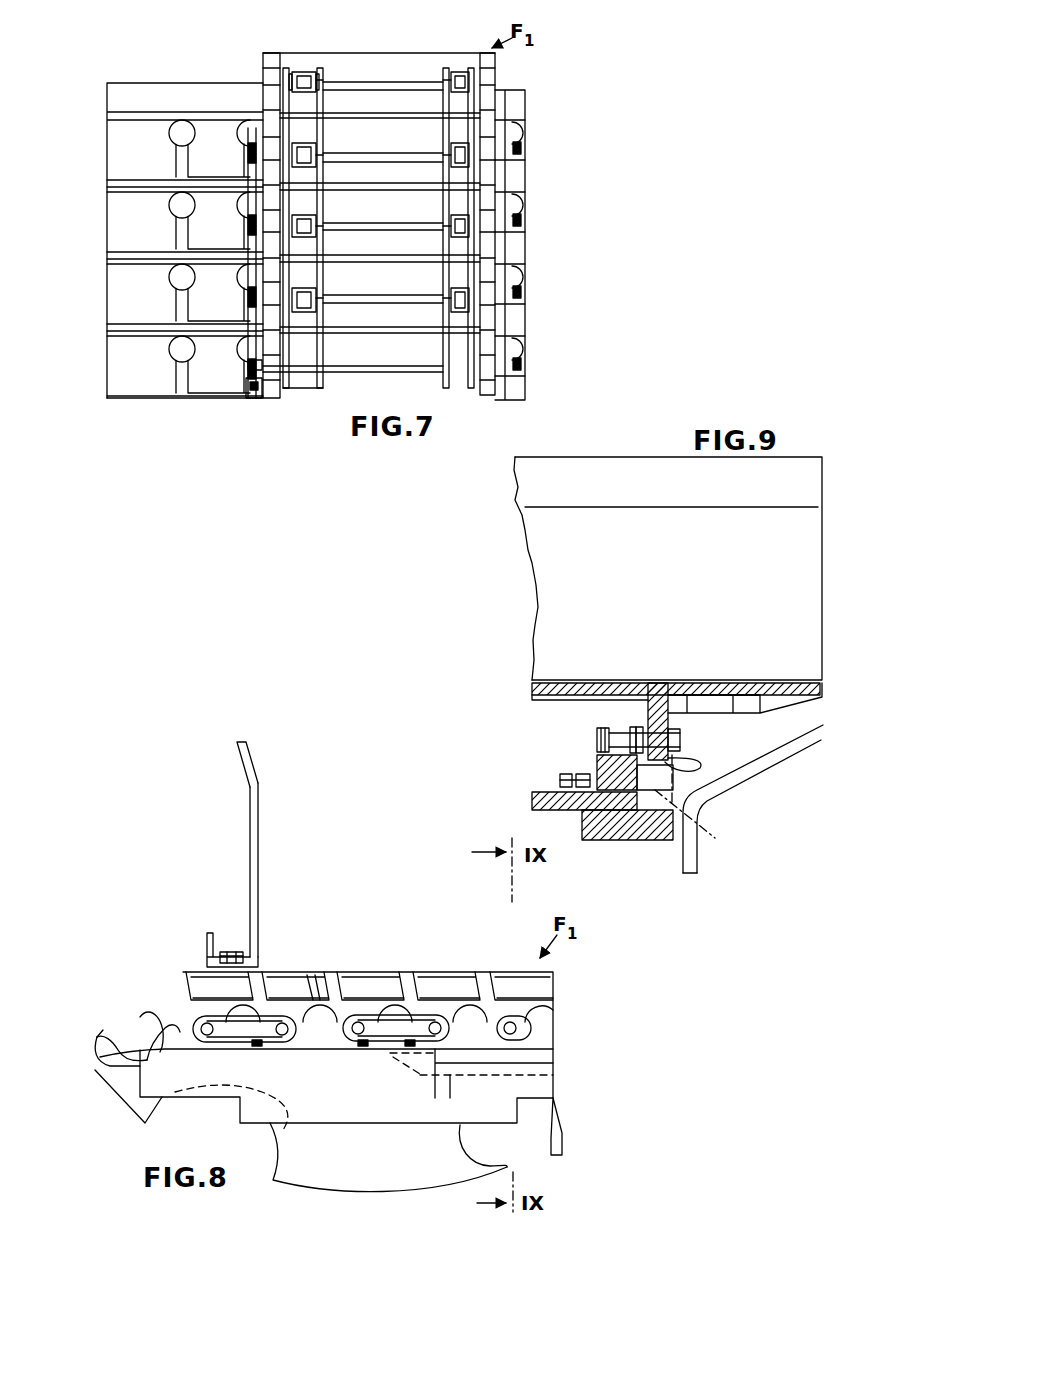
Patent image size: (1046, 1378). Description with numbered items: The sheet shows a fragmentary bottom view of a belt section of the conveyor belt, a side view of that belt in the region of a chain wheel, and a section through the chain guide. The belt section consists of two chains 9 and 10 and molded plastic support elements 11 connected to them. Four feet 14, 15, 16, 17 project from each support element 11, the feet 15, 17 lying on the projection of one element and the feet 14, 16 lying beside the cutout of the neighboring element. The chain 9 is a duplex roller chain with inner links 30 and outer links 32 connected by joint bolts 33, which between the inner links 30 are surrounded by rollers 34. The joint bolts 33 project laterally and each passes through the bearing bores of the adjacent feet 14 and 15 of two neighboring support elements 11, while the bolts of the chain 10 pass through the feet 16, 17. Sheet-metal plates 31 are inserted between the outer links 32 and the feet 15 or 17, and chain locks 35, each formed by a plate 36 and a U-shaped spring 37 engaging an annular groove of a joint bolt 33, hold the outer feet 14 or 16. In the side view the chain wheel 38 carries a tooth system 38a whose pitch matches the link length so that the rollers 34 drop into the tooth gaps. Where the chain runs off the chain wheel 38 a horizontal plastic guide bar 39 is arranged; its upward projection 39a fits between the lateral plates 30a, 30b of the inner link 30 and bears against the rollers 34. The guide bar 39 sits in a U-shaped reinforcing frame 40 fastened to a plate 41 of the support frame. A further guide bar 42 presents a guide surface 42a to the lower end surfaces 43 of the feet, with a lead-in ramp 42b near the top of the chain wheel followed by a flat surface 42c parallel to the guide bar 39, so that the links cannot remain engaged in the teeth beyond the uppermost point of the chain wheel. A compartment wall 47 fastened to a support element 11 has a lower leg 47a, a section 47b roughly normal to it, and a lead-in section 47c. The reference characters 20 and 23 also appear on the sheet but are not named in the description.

In FIG. 7, the chain 9 is at (305, 58).
In FIG. 7, the chain 10 is at (453, 60).
In FIG. 8, the chain 10 is at (235, 1046).
In FIG. 7, the support element 11 is at (140, 162).
In FIG. 8, the support element 11 is at (278, 986).
In FIG. 9, the support element 11 is at (826, 683).
In FIG. 7, the foot 14 is at (256, 153).
In FIG. 7, the foot 15 is at (271, 143).
In FIG. 7, the foot 16 is at (521, 148).
In FIG. 7, the foot 17 is at (500, 84).
In FIG. 8, the conveyor 20 is at (531, 1012).
In FIG. 8, the pivot pin 23 is at (416, 1012).
In FIG. 7, the inner link 30 is at (321, 96).
In FIG. 9, the inner link 30 is at (628, 690).
In FIG. 9, the lateral plate 30a is at (598, 742).
In FIG. 9, the lateral plate 30b is at (656, 690).
In FIG. 7, the sheet-metal plate 31 is at (284, 390).
In FIG. 7, the outer link 32 is at (332, 205).
In FIG. 7, the joint bolt 33 is at (330, 157).
In FIG. 8, the joint bolt 33 is at (359, 1021).
In FIG. 7, the roller 34 is at (298, 82).
In FIG. 9, the roller 34 is at (672, 737).
In FIG. 7, the chain lock 35 is at (250, 383).
In FIG. 7, the plate 36 is at (254, 391).
In FIG. 8, the plate 36 is at (386, 1014).
In FIG. 7, the U-shaped spring 37 is at (249, 364).
In FIG. 8, the U-shaped spring 37 is at (412, 1016).
In FIG. 8, the chain wheel 38 is at (136, 1018).
In FIG. 8, the tooth system 38a is at (160, 1032).
In FIG. 9, the guide bar 39 is at (625, 840).
In FIG. 9, the upward projection 39a is at (620, 735).
In FIG. 9, the reinforcing frame 40 is at (592, 792).
In FIG. 9, the plate 41 is at (536, 800).
In FIG. 8, the guide bar 42 is at (322, 1067).
In FIG. 9, the guide bar 42 is at (712, 824).
In FIG. 8, the guide surface 42a is at (173, 1045).
In FIG. 8, the lead-in ramp 42b is at (147, 1070).
In FIG. 8, the flat surface 42c is at (317, 986).
In FIG. 9, the lower end surface 43 is at (677, 777).
In FIG. 8, the compartment wall 47 is at (266, 829).
In FIG. 8, the lower leg 47a is at (208, 956).
In FIG. 8, the section 47b is at (259, 872).
In FIG. 8, the lead-in section 47c is at (256, 772).